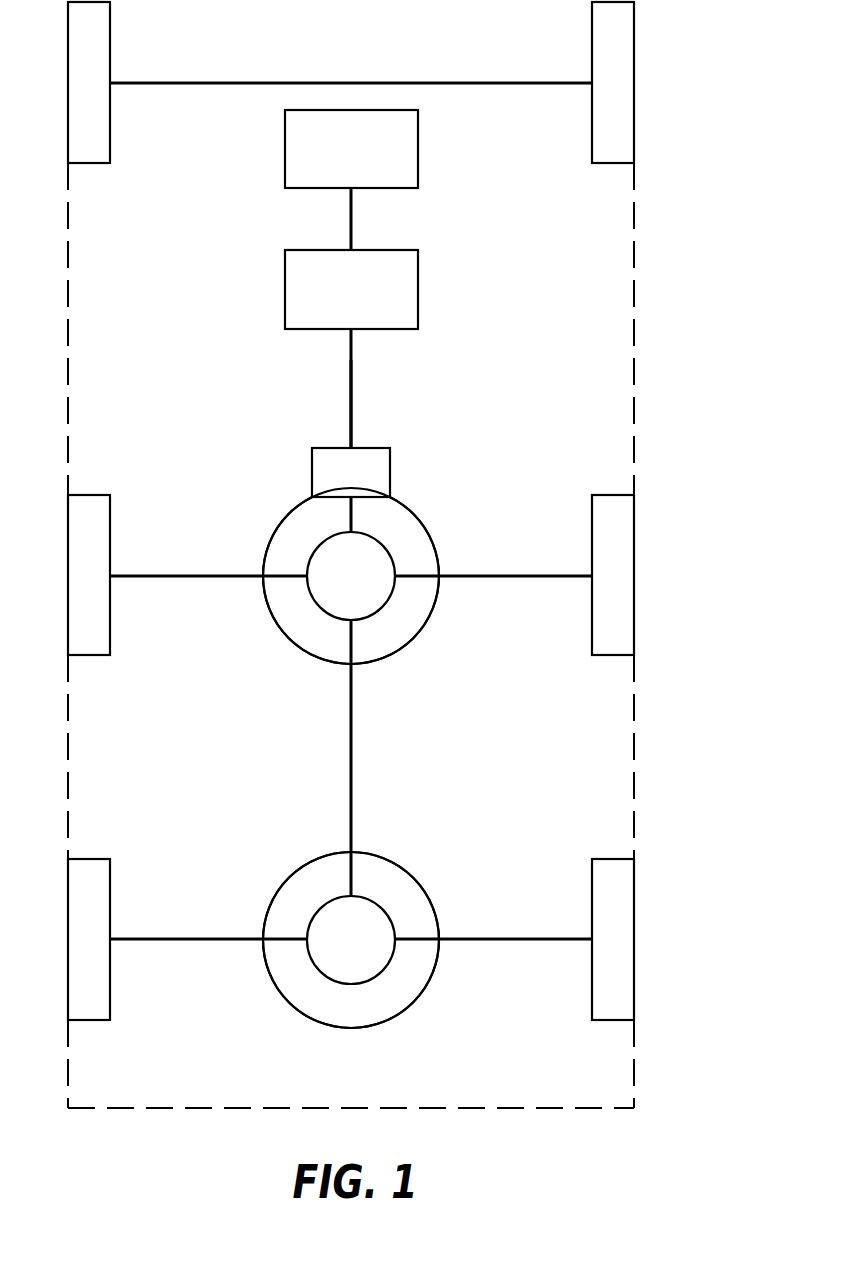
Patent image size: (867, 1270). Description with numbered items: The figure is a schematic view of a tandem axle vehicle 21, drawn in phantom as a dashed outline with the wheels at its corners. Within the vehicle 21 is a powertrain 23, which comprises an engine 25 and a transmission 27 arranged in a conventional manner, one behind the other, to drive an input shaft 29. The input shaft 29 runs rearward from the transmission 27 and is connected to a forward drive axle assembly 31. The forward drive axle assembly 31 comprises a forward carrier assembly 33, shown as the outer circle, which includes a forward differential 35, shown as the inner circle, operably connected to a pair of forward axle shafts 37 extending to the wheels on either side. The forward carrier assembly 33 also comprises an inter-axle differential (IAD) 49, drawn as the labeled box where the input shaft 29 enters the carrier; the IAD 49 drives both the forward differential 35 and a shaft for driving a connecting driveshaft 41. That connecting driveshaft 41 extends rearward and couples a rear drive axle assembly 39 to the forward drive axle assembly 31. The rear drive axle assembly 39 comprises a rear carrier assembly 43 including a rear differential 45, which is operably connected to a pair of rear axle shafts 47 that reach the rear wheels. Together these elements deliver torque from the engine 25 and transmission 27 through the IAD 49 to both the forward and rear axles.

The tandem axle vehicle 21 is at (640, 244).
The powertrain 23 is at (347, 355).
The engine 25 is at (418, 134).
The transmission 27 is at (418, 272).
The input shaft 29 is at (352, 374).
The forward drive axle assembly 31 is at (276, 486).
The forward carrier assembly 33 is at (421, 512).
The forward differential 35 is at (393, 560).
The forward axle shafts 37 is at (210, 575).
The rear drive axle assembly 39 is at (276, 850).
The connecting driveshaft 41 is at (352, 768).
The rear carrier assembly 43 is at (415, 863).
The rear differential 45 is at (390, 920).
The rear axle shafts 47 is at (210, 938).
The inter-axle differential (IAD) 49 is at (377, 447).